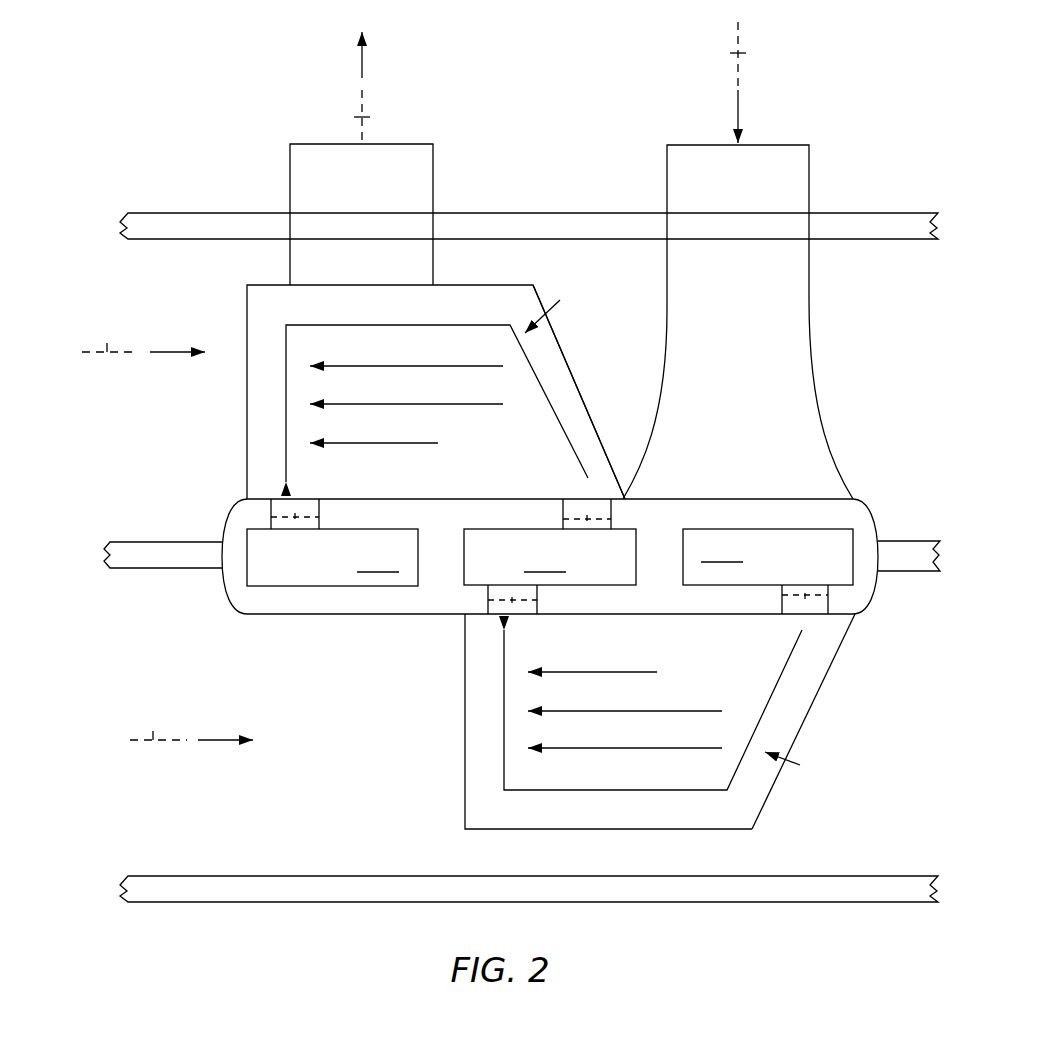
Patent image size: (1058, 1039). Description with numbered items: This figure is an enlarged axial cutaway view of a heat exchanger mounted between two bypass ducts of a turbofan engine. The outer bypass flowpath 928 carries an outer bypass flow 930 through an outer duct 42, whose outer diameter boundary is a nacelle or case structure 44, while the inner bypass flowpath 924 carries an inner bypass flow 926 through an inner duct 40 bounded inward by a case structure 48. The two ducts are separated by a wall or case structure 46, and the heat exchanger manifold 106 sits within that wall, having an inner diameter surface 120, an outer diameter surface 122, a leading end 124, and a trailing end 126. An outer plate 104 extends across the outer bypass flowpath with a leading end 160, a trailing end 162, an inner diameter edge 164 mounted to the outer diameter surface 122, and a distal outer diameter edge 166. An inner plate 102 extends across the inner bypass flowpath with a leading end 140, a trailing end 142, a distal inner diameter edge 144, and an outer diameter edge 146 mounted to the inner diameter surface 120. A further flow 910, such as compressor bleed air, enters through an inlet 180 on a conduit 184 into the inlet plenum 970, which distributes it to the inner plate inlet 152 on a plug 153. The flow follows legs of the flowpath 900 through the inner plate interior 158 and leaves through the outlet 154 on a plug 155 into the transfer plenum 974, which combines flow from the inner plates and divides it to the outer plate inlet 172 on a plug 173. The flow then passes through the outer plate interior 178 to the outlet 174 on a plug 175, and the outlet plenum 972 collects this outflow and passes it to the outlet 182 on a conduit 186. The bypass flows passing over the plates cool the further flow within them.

The inner duct 40 is at (219, 698).
The outer duct 42 is at (127, 410).
The nacelle or case structure 44 is at (155, 225).
The wall or case structure 46 is at (117, 547).
The case structure 48 is at (135, 882).
The inner plate 102 is at (620, 733).
The outer plate 104 is at (431, 352).
The manifold 106 is at (867, 498).
The inner diameter surface 120 is at (517, 538).
The outer diameter surface 122 is at (801, 499).
The leading end 124 is at (210, 566).
The trailing end 126 is at (885, 558).
The leading end 140 is at (464, 712).
The trailing end 142 is at (820, 690).
The inner diameter edge 144 is at (713, 829).
The outer diameter edge 146 is at (680, 614).
The inlet 152 is at (808, 597).
The plug 153 is at (822, 606).
The outlet 154 is at (522, 529).
The plug 155 is at (488, 603).
The interior 158 is at (800, 765).
The leading end 160 is at (246, 430).
The trailing end 162 is at (570, 365).
The inner diameter edge 164 is at (462, 499).
The outer diameter edge 166 is at (377, 285).
The inlet 172 is at (585, 527).
The plug 173 is at (593, 517).
The outlet 174 is at (293, 517).
The plug 175 is at (271, 515).
The interior 178 is at (560, 314).
The inlet 180 is at (770, 272).
The outlet 182 is at (419, 164).
The conduit 184 is at (790, 302).
The conduit 186 is at (430, 170).
The flowpath 900 is at (358, 117).
The further flow 910 is at (362, 62).
The inner bypass flowpath 924 is at (153, 731).
The inner bypass flow 926 is at (215, 742).
The outer bypass flowpath 928 is at (107, 343).
The outer bypass flow 930 is at (167, 353).
The inlet plenum 970 is at (768, 557).
The outlet plenum 972 is at (332, 557).
The transfer plenum 974 is at (550, 557).